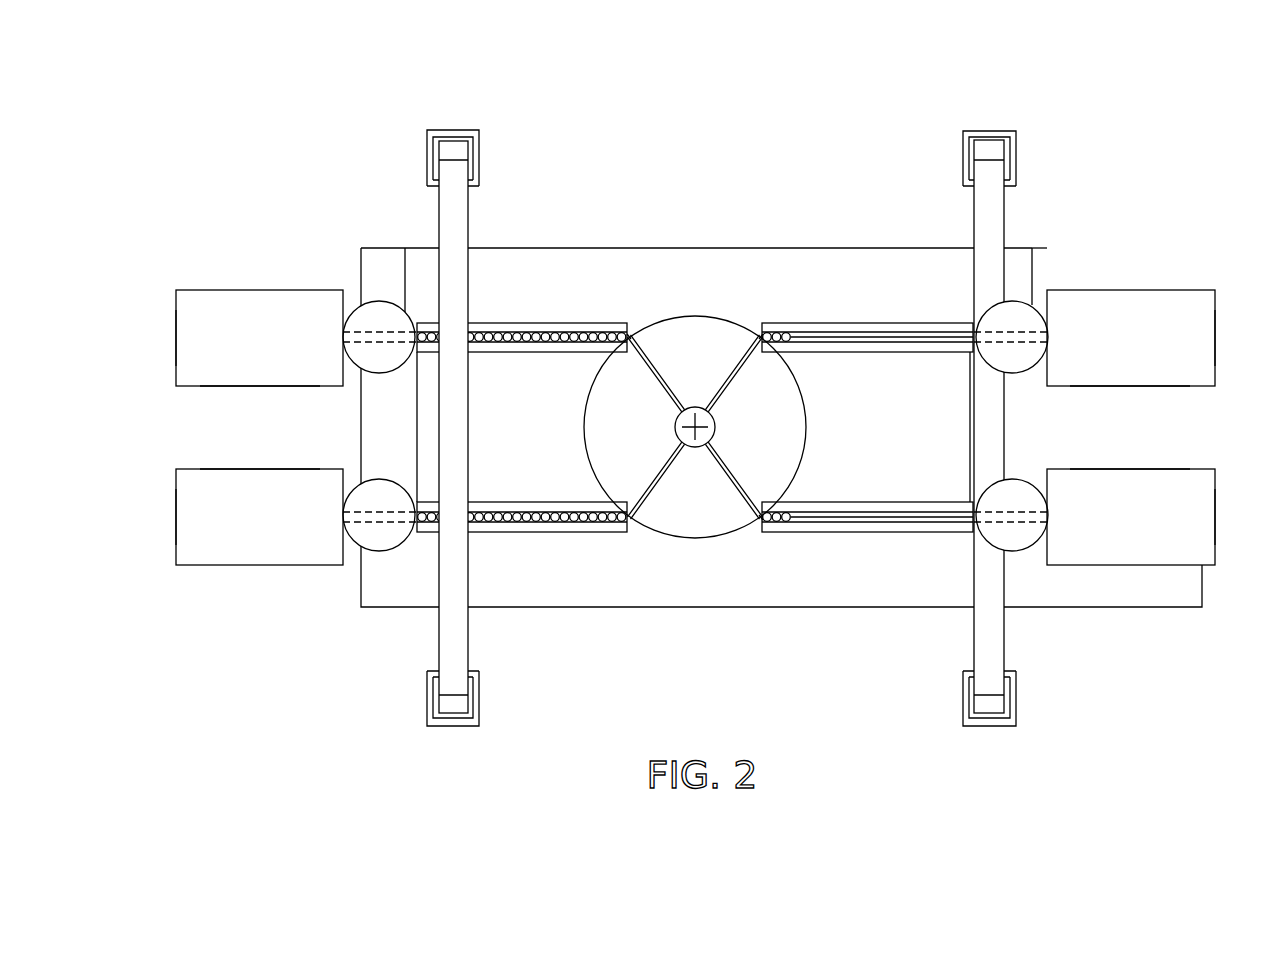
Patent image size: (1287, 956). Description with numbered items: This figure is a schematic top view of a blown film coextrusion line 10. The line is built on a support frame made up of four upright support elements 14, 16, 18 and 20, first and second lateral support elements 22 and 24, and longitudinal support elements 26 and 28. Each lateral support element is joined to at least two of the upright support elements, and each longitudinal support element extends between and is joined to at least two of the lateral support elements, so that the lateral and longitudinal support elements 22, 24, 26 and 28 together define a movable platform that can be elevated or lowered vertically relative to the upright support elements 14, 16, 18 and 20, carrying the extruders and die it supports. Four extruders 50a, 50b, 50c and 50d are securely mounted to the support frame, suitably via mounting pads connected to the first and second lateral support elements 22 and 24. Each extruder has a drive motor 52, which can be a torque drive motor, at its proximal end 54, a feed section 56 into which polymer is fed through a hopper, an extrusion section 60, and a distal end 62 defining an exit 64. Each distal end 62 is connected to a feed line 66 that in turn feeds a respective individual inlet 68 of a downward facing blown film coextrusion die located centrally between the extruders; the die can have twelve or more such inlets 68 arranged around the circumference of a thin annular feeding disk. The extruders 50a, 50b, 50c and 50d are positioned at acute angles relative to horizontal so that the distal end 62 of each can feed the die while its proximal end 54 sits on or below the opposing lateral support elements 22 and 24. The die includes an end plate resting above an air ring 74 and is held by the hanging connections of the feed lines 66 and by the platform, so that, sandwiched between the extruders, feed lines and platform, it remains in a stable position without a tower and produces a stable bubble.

The blown film coextrusion line 10 is at (1068, 197).
The upright support element 14 is at (455, 707).
The upright support element 16 is at (987, 707).
The upright support element 18 is at (455, 158).
The upright support element 20 is at (990, 158).
The first lateral support element 22 is at (452, 428).
The second lateral support element 24 is at (990, 417).
The longitudinal support element 26 is at (858, 280).
The longitudinal support element 28 is at (523, 577).
The extruder 50a is at (213, 565).
The extruder 50b is at (1185, 565).
The extruder 50c is at (231, 291).
The extruder 50d is at (1170, 291).
The drive motor 52 is at (197, 323).
The proximal end 54 is at (225, 478).
The feed section 56 is at (379, 332).
The extrusion section 60 is at (540, 335).
The distal end 62 is at (630, 332).
The exit 64 is at (760, 332).
The feed line 66 is at (652, 373).
The inlet 68 is at (697, 451).
The air ring 74 is at (806, 408).